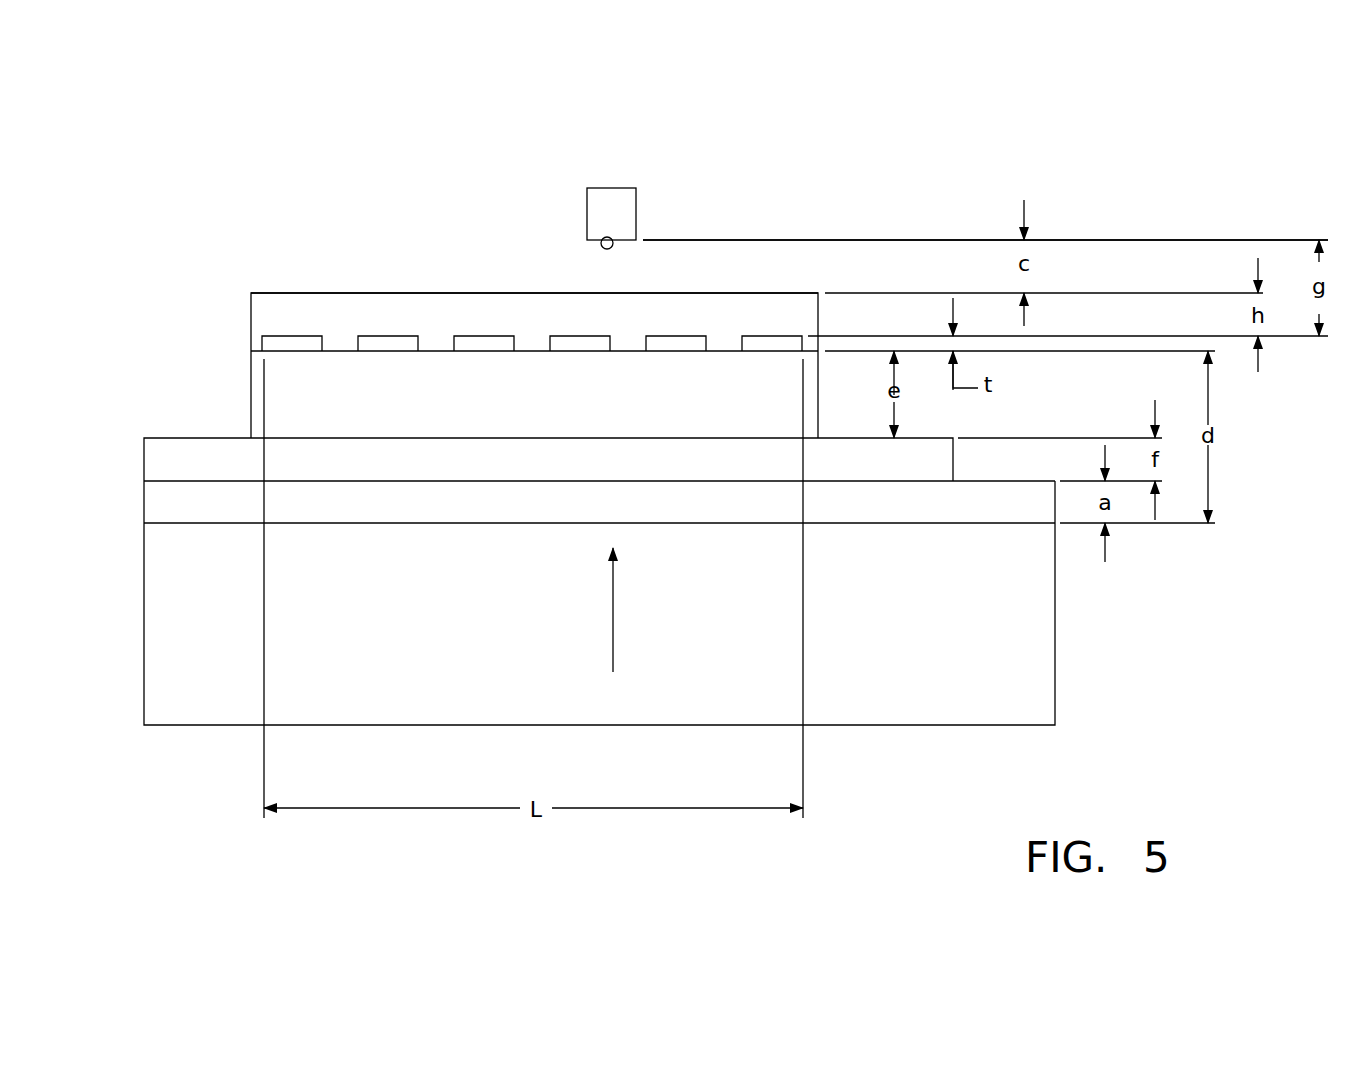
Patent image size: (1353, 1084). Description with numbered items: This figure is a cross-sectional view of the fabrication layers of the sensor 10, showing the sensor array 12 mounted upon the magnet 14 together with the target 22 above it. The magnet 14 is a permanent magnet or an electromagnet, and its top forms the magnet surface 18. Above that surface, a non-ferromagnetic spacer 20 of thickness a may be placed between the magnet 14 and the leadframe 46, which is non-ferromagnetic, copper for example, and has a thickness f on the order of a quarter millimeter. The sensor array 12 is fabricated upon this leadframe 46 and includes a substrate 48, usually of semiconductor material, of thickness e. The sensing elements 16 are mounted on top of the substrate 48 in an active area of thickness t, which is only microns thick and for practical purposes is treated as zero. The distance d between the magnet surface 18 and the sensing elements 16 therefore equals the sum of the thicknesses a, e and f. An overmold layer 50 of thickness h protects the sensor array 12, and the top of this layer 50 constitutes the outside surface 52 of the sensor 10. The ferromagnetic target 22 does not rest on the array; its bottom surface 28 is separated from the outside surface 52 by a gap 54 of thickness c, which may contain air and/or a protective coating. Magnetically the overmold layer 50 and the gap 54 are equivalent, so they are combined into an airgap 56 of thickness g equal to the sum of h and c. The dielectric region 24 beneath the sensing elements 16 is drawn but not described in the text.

The sensor 10 is at (366, 187).
The sensor array 12 is at (355, 275).
The magnet 14 is at (1045, 685).
The sensing elements 16 is at (580, 336).
The magnet surface 18 is at (1013, 524).
The non-ferromagnetic spacer 20 is at (153, 504).
The target 22 is at (585, 200).
The dielectric layer 24 is at (675, 350).
The bottom surface of the target 28 is at (603, 237).
The leadframe 46 is at (150, 456).
The substrate 48 is at (258, 396).
The overmold layer 50 is at (266, 303).
The outside surface 52 is at (465, 295).
The gap 54 is at (573, 268).
The airgap 56 is at (1163, 223).